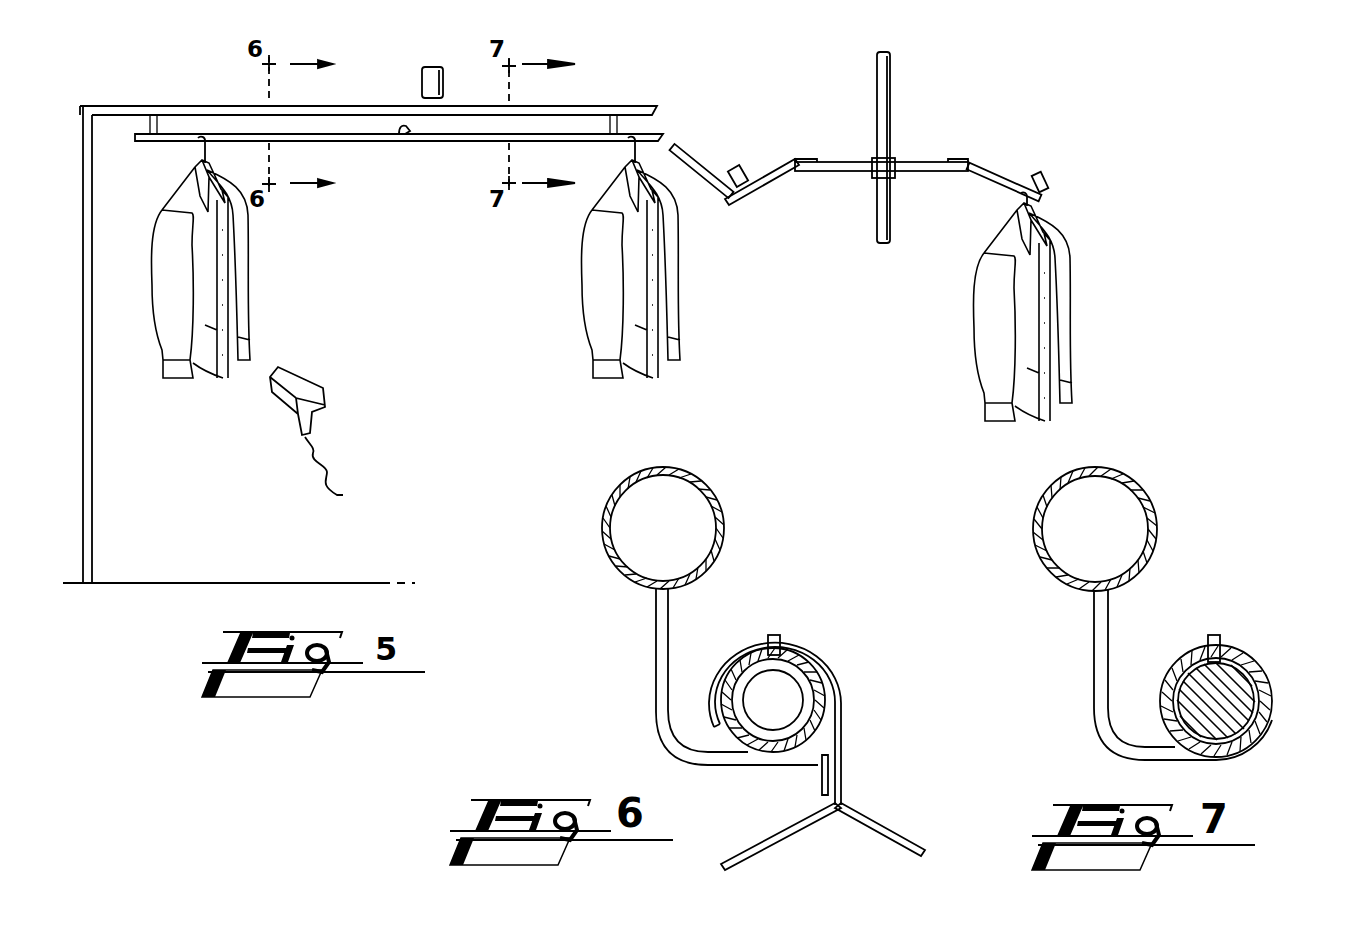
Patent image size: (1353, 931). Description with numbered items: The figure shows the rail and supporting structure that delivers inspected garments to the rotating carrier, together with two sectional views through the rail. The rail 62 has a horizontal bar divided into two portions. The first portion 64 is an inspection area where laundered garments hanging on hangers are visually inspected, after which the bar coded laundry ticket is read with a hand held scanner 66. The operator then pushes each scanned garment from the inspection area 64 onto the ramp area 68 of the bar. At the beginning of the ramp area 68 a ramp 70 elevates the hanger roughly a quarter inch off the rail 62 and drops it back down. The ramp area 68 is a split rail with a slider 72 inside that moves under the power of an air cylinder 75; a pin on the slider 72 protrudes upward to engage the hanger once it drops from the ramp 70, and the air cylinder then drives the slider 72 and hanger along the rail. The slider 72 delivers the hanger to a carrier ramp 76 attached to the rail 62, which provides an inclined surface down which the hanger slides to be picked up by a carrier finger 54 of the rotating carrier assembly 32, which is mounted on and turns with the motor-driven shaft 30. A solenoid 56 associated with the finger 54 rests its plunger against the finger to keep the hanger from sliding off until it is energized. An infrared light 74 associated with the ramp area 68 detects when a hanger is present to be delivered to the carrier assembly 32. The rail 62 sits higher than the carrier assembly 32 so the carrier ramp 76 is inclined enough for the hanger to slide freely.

In FIG. 5, the shaft 30 is at (877, 103).
In FIG. 5, the carrier assembly 32 is at (859, 164).
In FIG. 5, the carrier finger 54 is at (772, 187).
In FIG. 5, the solenoid 56 is at (742, 167).
In FIG. 5, the rail 62 is at (214, 84).
In FIG. 5, the first portion 64 is at (177, 143).
In FIG. 6, the first portion 64 is at (788, 768).
In FIG. 5, the hand held scanner 66 is at (304, 380).
In FIG. 5, the ramp area 68 is at (417, 143).
In FIG. 6, the ramp area 68 is at (773, 700).
In FIG. 7, the ramp area 68 is at (1257, 665).
In FIG. 5, the ramp 70 is at (402, 130).
In FIG. 6, the ramp 70 is at (778, 636).
In FIG. 7, the slider 72 is at (1205, 683).
In FIG. 5, the infrared light 74 is at (424, 84).
In FIG. 6, the air cylinder 75 is at (836, 683).
In FIG. 5, the carrier ramp 76 is at (690, 147).